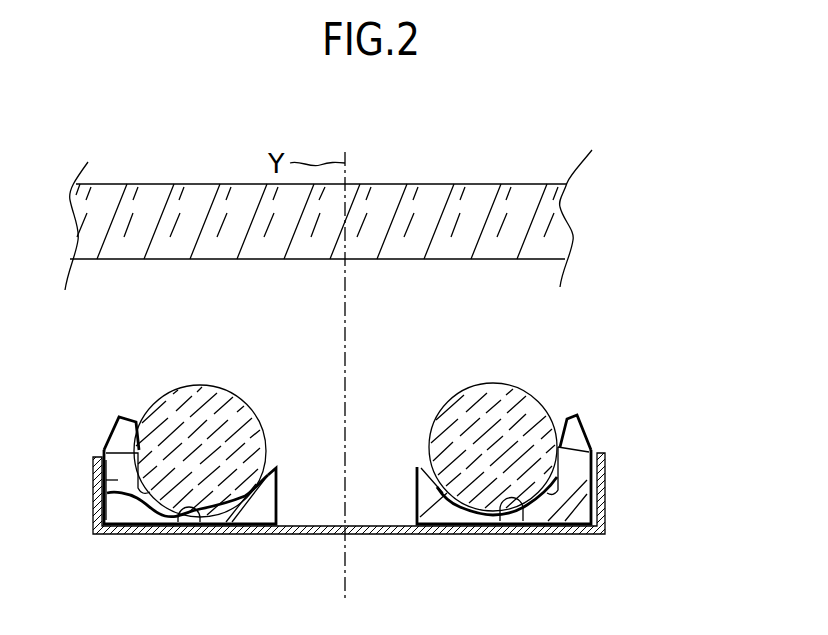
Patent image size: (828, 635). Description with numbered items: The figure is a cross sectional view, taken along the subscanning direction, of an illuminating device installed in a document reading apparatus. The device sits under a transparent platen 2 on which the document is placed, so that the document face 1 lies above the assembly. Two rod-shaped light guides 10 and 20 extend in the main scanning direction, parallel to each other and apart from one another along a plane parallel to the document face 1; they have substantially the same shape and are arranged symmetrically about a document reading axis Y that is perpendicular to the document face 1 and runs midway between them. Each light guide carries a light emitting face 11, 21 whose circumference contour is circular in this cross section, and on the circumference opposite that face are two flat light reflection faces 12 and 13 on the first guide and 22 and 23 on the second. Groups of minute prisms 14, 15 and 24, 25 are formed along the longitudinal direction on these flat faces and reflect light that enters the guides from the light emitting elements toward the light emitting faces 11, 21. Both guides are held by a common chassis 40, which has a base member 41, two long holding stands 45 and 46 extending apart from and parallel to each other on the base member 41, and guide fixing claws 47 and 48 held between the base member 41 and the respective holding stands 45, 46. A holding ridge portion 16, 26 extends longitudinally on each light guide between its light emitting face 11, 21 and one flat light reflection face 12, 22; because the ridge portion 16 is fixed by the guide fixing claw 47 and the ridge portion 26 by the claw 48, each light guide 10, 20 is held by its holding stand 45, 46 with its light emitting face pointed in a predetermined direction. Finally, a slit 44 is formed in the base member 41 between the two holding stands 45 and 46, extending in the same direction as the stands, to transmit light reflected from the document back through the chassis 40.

The document face 1 is at (410, 184).
The transparent platen 2 is at (510, 217).
The light guide 10 is at (186, 410).
The light emitting face 11 is at (238, 397).
The flat light reflection face 12 is at (112, 462).
The flat light reflection face 13 is at (217, 535).
The group of minute prisms 14 is at (100, 504).
The group of minute prisms 15 is at (158, 537).
The holding ridge portion 16 is at (130, 419).
The light guide 20 is at (487, 393).
The light emitting face 21 is at (452, 393).
The flat light reflection face 22 is at (557, 472).
The flat light reflection face 23 is at (500, 524).
The group of minute prisms 24 is at (577, 530).
The group of minute prisms 25 is at (514, 523).
The holding ridge portion 26 is at (565, 420).
The chassis 40 is at (413, 537).
The base member 41 is at (120, 537).
The slit 44 is at (303, 537).
The holding stand 45 is at (118, 480).
The holding stand 46 is at (583, 493).
The guide fixing claw 47 is at (114, 428).
The guide fixing claw 48 is at (587, 427).